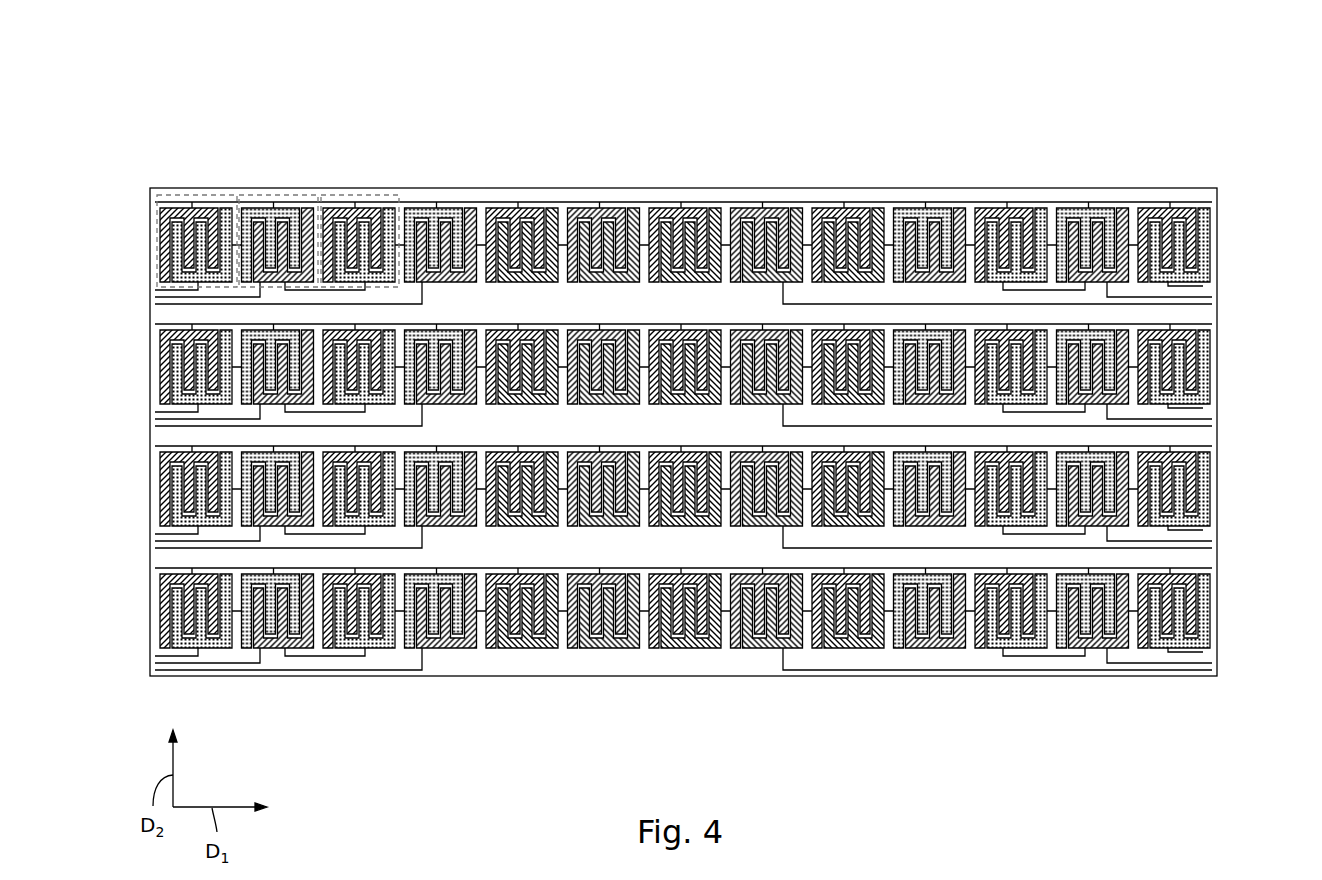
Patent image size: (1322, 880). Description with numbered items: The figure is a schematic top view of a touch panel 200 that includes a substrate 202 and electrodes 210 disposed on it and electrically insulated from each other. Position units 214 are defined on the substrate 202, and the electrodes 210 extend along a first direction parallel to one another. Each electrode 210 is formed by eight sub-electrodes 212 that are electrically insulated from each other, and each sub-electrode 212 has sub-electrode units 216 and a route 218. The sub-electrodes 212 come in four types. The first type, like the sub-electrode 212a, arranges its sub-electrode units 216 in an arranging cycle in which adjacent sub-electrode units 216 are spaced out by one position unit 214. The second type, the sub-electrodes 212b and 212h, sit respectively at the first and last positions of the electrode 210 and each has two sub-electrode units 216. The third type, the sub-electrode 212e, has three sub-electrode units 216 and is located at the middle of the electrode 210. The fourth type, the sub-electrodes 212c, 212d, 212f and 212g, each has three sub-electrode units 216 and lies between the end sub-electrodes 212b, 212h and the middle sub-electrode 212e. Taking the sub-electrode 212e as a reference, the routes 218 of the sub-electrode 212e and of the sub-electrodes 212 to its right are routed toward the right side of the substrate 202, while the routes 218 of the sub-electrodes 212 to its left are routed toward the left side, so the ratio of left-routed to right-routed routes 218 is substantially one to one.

The touch panel 200 is at (187, 75).
The substrate 202 is at (1172, 188).
The electrode 210 is at (1205, 232).
The sub-electrode 212 is at (163, 390).
The sub-electrode 212a is at (215, 208).
The sub-electrode 212b is at (296, 208).
The sub-electrode 212c is at (391, 208).
The sub-electrode 212d is at (574, 208).
The sub-electrode 212e is at (638, 208).
The sub-electrode 212f is at (897, 208).
The sub-electrode 212g is at (1059, 208).
The sub-electrode 212h is at (1207, 204).
The position unit 214 is at (176, 195).
The sub-electrode unit 216 is at (175, 404).
The route 218 is at (1203, 284).